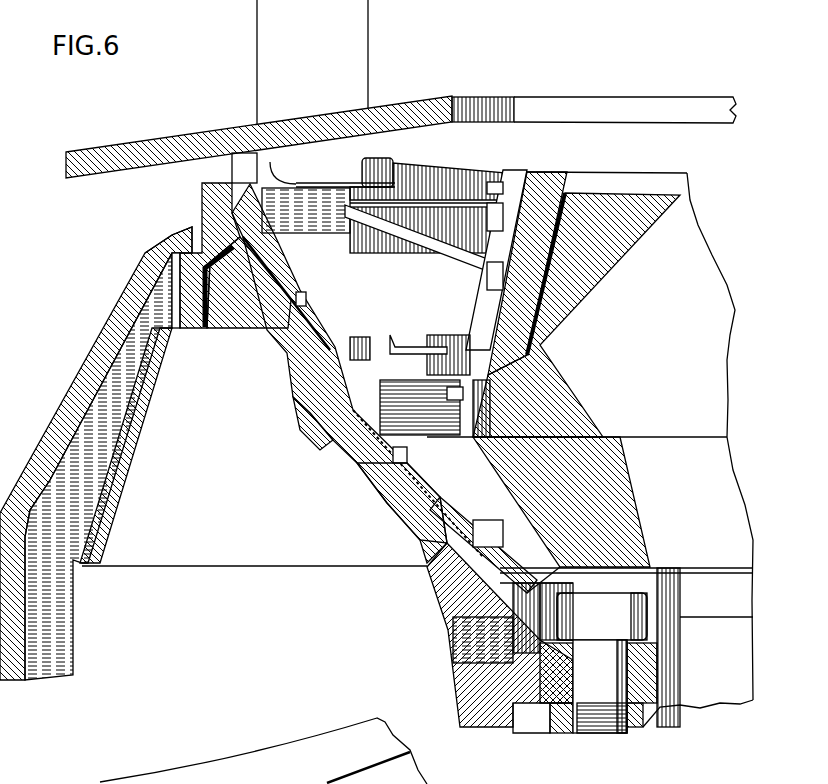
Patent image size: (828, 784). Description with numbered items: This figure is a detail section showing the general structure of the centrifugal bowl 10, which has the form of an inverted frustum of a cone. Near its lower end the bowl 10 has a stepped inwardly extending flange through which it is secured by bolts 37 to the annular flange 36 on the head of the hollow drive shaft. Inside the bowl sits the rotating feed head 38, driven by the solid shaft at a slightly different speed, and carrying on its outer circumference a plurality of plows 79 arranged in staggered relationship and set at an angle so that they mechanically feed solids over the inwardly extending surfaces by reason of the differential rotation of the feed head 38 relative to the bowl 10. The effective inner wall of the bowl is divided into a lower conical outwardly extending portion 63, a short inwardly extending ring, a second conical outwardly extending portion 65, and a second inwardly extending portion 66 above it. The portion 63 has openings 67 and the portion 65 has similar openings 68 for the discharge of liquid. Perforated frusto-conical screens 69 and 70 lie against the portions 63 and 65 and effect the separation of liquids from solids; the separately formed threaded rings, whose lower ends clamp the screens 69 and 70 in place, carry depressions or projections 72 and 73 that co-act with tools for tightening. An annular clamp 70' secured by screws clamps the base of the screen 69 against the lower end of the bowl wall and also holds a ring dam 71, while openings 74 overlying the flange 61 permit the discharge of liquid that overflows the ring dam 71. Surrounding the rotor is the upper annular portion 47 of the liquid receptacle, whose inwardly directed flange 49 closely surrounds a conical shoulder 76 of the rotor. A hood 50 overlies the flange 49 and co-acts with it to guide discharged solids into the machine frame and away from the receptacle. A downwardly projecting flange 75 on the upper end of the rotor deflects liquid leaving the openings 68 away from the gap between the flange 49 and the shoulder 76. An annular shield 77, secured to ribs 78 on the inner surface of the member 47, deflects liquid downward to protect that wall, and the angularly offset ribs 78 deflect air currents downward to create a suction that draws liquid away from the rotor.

The bowl 10 is at (425, 547).
The annular flange 36 is at (643, 727).
The bolts 37 is at (593, 722).
The rotating feed head 38 is at (493, 313).
The upper annular portion of liquid receptacle 47 is at (12, 683).
The inwardly directed flange 49 is at (160, 240).
The hood 50 is at (137, 150).
The flange 61 is at (540, 720).
The lower conical outwardly extending portion 63 is at (347, 410).
The second conical outwardly extending portion 65 is at (278, 272).
The second inwardly extending portion 66 is at (298, 183).
The openings 67 is at (400, 510).
The openings 68 is at (263, 330).
The screen 69 is at (397, 470).
The screen 70 is at (320, 299).
The annular clamp 70' is at (483, 530).
The ring dam 71 is at (563, 567).
The depressions and/or projections 72 is at (363, 343).
The depressions and/or projections 73 is at (258, 168).
The openings 74 is at (460, 660).
The downwardly projecting flange 75 is at (180, 298).
The conical shoulder 76 is at (200, 232).
The annular shield 77 is at (183, 560).
The ribs 78 is at (60, 613).
The plows 79 is at (392, 348).